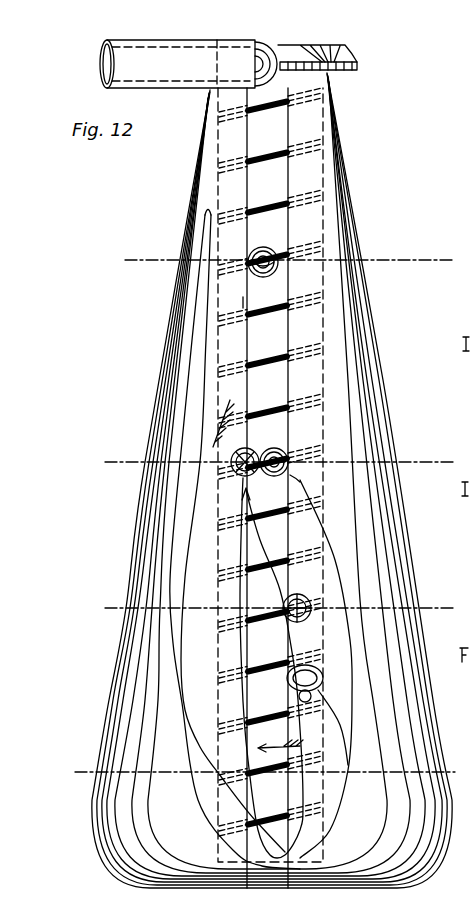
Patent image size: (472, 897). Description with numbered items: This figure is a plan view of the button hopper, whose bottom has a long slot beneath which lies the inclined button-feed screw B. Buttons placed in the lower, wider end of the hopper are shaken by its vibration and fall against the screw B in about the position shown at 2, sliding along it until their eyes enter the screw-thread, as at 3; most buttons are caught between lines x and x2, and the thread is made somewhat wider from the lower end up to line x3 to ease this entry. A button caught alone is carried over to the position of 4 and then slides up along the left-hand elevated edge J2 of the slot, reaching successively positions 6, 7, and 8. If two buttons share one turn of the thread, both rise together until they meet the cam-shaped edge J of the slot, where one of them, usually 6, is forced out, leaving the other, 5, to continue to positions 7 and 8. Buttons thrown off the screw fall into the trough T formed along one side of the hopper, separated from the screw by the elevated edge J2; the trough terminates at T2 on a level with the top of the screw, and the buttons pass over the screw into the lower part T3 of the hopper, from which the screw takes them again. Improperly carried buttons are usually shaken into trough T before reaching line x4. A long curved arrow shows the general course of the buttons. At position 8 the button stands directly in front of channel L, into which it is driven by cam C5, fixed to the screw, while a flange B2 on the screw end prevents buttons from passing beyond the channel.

The channel L is at (190, 55).
The button position 8 is at (272, 56).
The flange B2 is at (330, 50).
The cam C5 is at (346, 72).
The section line x4 is at (273, 261).
The section line x3 is at (261, 463).
The section line x2 is at (261, 607).
The section line x is at (252, 773).
The button position 7 is at (278, 268).
The elevated edge of slot J2 is at (243, 302).
The trough T is at (195, 357).
The button position 6 is at (237, 476).
The button position 5 is at (290, 452).
The cam-shaped edge of slot J is at (296, 474).
The button position 3 is at (312, 598).
The button position 4 is at (238, 620).
The button position 2 is at (314, 672).
The lower part of hopper T3 is at (335, 669).
The trough termination T2 is at (233, 533).
The button-feed screw B is at (270, 488).